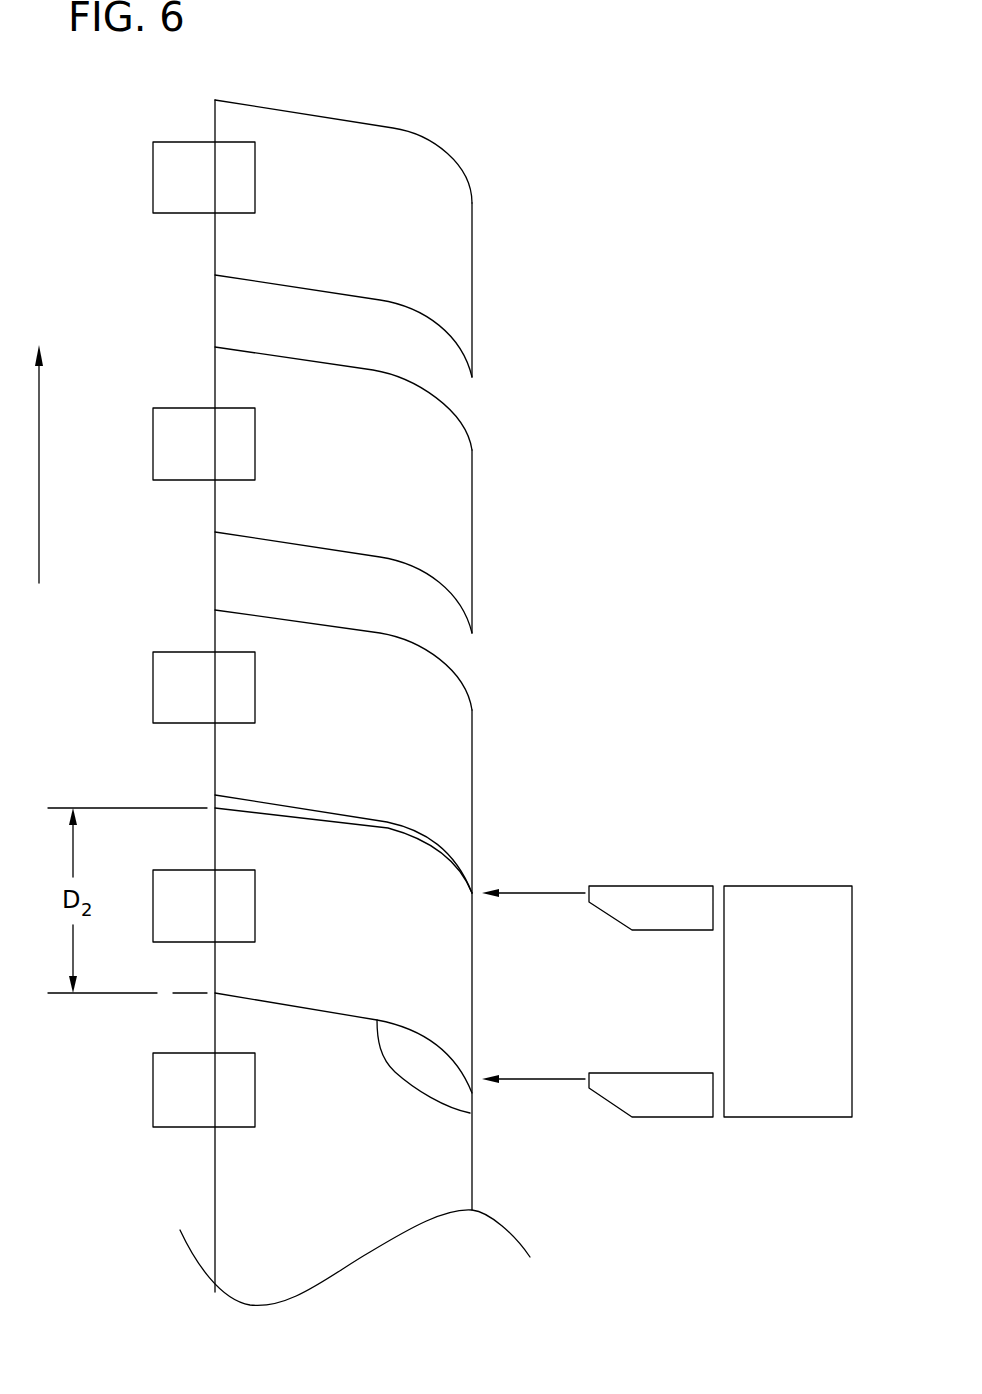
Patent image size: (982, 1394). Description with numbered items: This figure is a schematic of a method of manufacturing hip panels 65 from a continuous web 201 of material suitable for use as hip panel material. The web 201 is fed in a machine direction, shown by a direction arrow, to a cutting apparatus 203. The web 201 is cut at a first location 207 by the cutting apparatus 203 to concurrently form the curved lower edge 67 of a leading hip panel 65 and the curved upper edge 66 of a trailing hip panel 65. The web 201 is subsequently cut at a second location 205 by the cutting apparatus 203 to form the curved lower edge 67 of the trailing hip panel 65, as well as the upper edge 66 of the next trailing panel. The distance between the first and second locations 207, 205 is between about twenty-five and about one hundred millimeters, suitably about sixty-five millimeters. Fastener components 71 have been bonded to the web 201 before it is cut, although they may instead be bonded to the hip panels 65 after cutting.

The hip panel 65 is at (371, 653).
The curved upper edge 66 is at (393, 128).
The curved lower edge 67 is at (260, 283).
The fastener component 71 is at (139, 183).
The web 201 is at (360, 1233).
The cutting apparatus 203 is at (752, 886).
The second location 205 is at (653, 1073).
The first location 207 is at (645, 886).